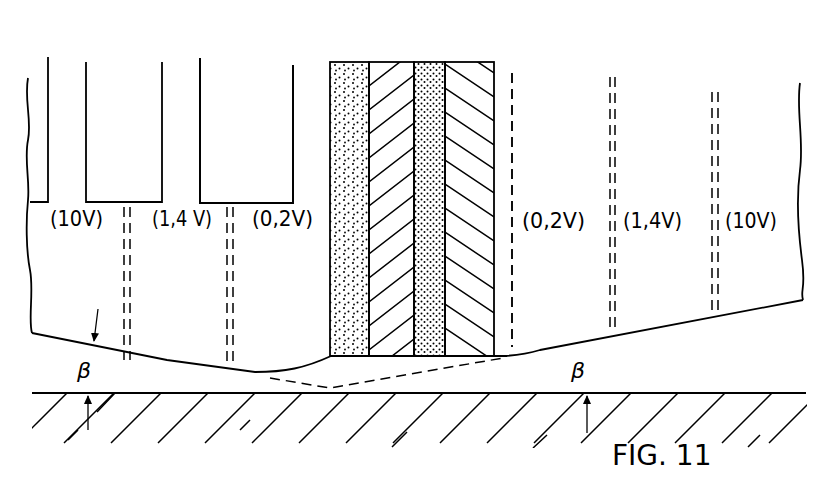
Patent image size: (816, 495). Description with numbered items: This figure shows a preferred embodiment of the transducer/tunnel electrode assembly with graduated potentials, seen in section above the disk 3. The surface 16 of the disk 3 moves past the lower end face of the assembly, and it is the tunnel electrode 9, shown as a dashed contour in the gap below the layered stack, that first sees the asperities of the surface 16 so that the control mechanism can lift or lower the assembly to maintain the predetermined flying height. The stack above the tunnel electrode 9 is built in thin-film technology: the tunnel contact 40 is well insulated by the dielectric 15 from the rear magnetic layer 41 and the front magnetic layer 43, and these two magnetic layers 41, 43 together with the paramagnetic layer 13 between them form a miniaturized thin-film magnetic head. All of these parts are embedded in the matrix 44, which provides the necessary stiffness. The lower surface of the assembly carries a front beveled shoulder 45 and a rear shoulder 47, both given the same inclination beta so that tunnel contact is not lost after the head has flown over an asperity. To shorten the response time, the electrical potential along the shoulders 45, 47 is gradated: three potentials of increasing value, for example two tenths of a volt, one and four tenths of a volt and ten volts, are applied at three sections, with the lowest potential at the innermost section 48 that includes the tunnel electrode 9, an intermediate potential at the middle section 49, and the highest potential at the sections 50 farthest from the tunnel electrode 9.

The disk 3 is at (433, 428).
The tunnel electrode 9 is at (280, 368).
The paramagnetic layer 13 is at (427, 77).
The dielectric 15 is at (358, 123).
The surface of disk 16 is at (729, 391).
The tunnel contact 40 is at (306, 121).
The rear magnetic layer 41 is at (393, 77).
The front magnetic layer 43 is at (473, 73).
The matrix 44 is at (130, 121).
The beveled shoulder 45 is at (168, 361).
The rear shoulder 47 is at (647, 336).
The innermost section 48 is at (580, 341).
The intermediate section 49 is at (200, 355).
The outermost section 50 is at (53, 327).